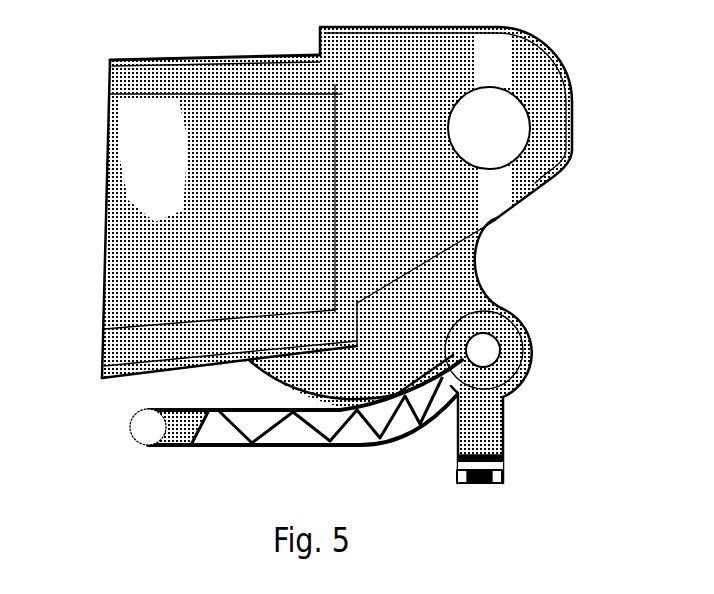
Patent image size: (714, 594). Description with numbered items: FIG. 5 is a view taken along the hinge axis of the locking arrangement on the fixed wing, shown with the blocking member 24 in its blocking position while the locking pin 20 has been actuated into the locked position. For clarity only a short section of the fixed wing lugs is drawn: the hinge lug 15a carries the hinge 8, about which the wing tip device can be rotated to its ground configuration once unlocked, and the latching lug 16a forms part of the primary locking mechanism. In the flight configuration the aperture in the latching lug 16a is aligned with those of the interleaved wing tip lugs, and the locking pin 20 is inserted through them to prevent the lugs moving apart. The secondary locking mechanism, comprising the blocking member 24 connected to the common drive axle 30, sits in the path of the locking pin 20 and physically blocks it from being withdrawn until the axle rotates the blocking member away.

The hinge lug 15a is at (547, 80).
The hinge 8 is at (489, 128).
The latching lug 16a is at (465, 288).
The locking pin 20 is at (493, 323).
The blocking member 24 is at (483, 350).
The common drive axle 30 is at (143, 430).